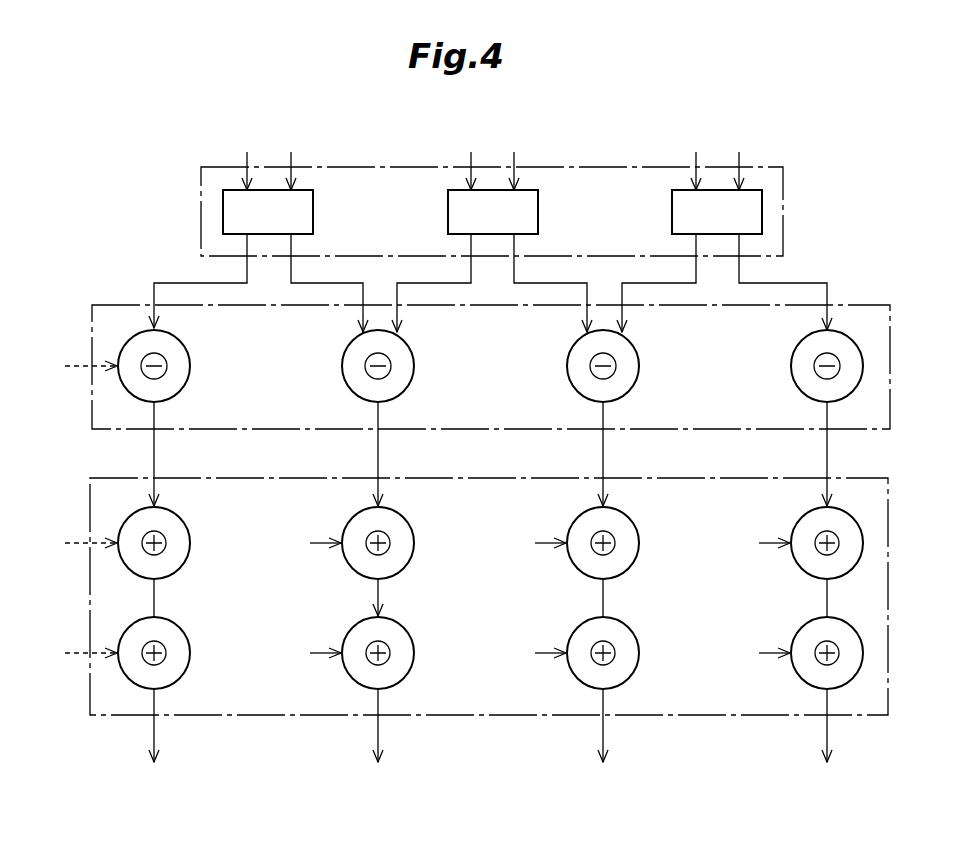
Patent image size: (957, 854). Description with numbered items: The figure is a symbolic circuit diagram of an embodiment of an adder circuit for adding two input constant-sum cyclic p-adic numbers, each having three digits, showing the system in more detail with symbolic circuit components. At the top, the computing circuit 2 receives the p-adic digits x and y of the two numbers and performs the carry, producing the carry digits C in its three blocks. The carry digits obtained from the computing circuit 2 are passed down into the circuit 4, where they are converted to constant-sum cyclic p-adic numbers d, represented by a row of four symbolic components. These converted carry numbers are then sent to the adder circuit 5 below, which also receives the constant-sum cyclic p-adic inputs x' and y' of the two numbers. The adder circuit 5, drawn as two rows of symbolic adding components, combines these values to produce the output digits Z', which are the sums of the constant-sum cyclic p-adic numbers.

The computing circuit 2 is at (783, 233).
The circuit for converting the carry number to a constant-sum cyclic p-adic number 4 is at (890, 353).
The adder circuit 5 is at (888, 556).